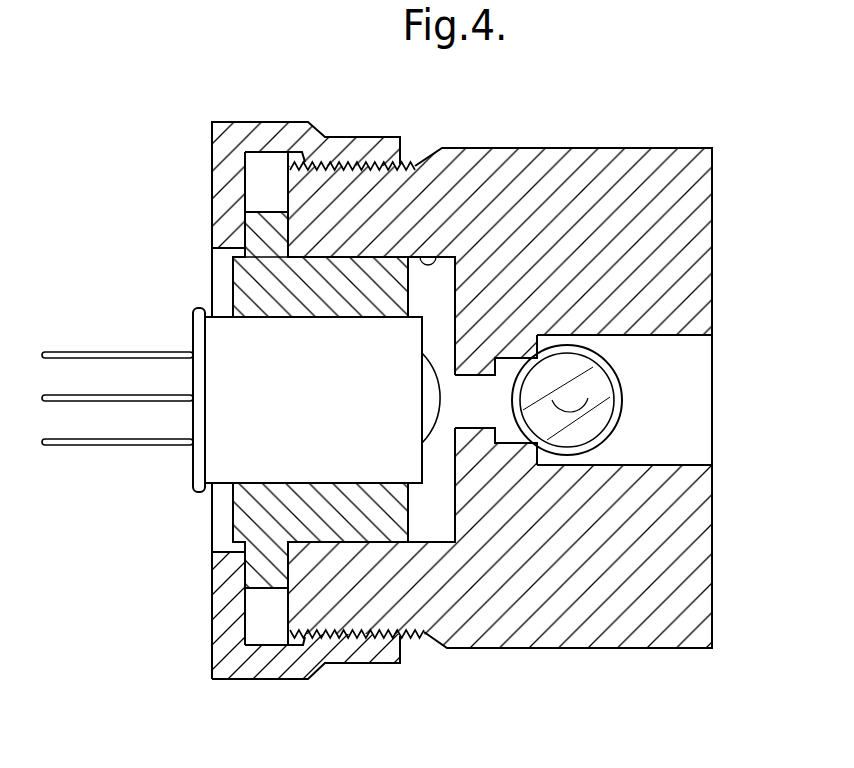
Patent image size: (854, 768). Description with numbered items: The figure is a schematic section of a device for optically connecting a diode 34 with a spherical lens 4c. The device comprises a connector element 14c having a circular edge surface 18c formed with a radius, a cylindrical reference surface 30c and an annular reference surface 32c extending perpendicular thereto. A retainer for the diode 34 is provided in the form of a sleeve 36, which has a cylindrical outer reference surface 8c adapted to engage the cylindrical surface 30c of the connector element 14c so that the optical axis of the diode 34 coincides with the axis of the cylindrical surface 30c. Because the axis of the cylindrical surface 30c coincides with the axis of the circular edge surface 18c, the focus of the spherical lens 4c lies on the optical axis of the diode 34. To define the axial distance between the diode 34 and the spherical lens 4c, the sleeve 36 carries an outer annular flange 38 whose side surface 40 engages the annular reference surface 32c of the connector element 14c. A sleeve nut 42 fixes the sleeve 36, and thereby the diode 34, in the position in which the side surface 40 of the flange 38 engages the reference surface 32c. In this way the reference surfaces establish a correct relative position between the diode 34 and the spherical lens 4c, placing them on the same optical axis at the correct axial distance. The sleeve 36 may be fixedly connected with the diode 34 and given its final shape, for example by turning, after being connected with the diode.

The spherical lens 4c is at (600, 390).
The cylindrical outer reference surface 8c is at (343, 257).
The connector element 14c is at (572, 182).
The circular edge surface 18c is at (540, 368).
The cylindrical reference surface 30c is at (438, 257).
The annular reference surface 32c is at (290, 232).
The diode 34 is at (248, 440).
The sleeve 36 is at (263, 287).
The annular flange 38 is at (265, 567).
The side surface 40 is at (288, 565).
The sleeve nut 42 is at (253, 668).